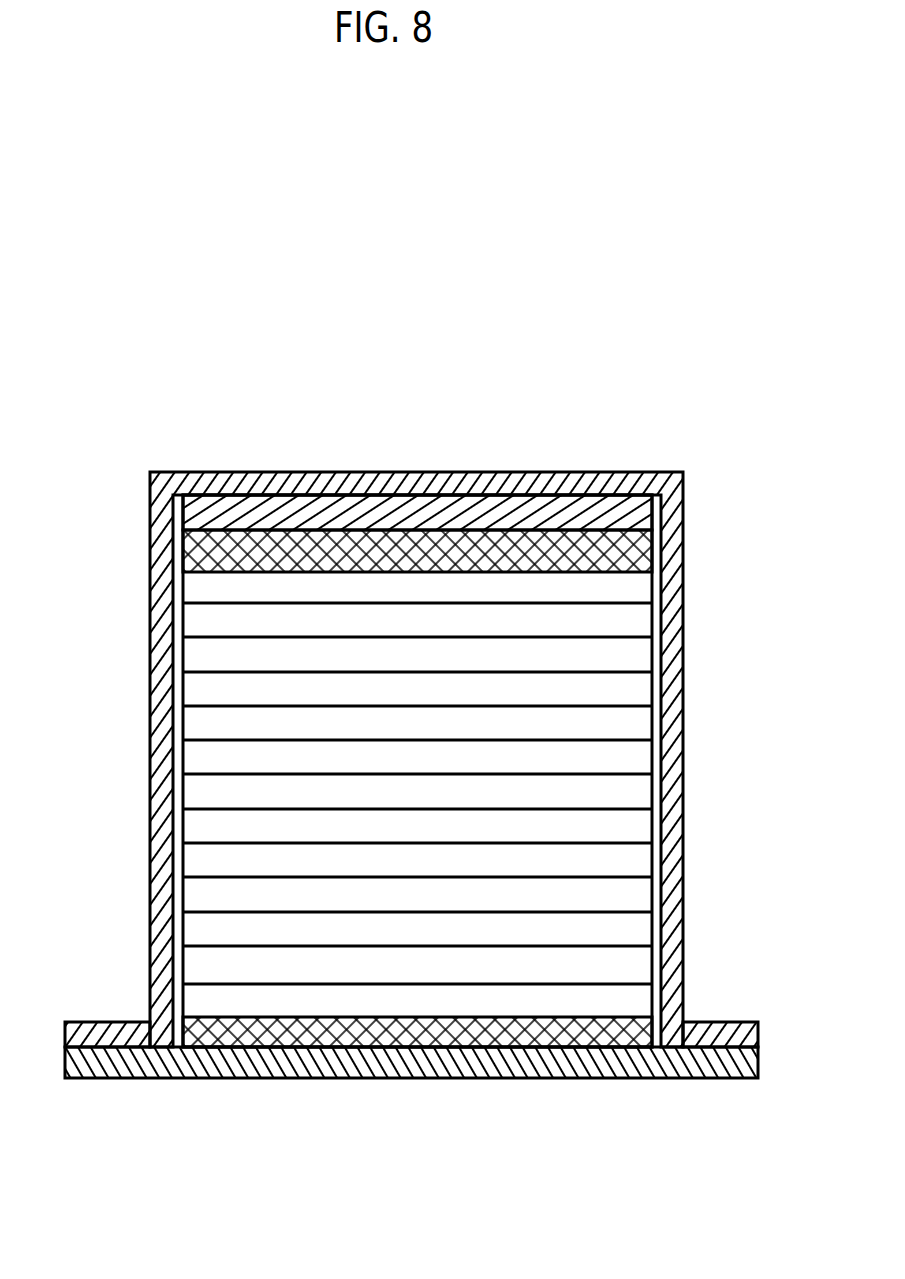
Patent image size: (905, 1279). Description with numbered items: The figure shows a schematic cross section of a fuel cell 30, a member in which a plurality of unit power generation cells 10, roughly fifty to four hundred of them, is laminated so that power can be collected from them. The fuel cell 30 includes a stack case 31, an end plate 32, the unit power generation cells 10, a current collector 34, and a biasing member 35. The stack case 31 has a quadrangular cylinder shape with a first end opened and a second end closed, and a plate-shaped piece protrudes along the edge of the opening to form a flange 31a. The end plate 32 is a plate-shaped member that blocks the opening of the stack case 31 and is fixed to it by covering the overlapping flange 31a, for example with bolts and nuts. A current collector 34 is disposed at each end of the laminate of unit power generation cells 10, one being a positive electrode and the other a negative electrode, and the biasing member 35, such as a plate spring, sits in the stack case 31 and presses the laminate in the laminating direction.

The fuel cell 30 is at (397, 752).
The stack case 31 is at (390, 759).
The flange 31a is at (90, 1021).
The end plate 32 is at (200, 1065).
The current collector 34 is at (620, 548).
The biasing member 35 is at (620, 514).
The unit power generation cell 10 is at (640, 622).